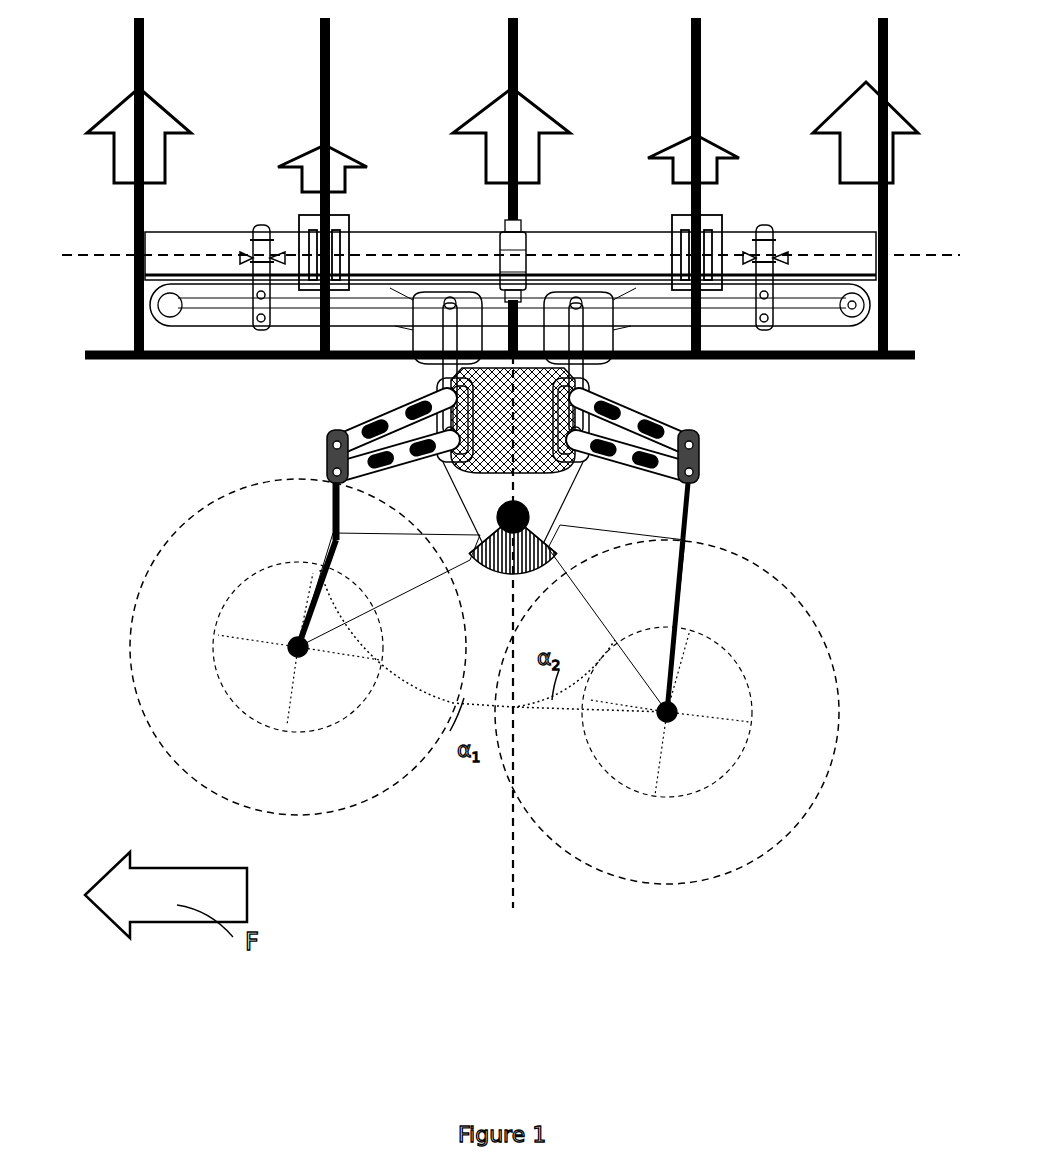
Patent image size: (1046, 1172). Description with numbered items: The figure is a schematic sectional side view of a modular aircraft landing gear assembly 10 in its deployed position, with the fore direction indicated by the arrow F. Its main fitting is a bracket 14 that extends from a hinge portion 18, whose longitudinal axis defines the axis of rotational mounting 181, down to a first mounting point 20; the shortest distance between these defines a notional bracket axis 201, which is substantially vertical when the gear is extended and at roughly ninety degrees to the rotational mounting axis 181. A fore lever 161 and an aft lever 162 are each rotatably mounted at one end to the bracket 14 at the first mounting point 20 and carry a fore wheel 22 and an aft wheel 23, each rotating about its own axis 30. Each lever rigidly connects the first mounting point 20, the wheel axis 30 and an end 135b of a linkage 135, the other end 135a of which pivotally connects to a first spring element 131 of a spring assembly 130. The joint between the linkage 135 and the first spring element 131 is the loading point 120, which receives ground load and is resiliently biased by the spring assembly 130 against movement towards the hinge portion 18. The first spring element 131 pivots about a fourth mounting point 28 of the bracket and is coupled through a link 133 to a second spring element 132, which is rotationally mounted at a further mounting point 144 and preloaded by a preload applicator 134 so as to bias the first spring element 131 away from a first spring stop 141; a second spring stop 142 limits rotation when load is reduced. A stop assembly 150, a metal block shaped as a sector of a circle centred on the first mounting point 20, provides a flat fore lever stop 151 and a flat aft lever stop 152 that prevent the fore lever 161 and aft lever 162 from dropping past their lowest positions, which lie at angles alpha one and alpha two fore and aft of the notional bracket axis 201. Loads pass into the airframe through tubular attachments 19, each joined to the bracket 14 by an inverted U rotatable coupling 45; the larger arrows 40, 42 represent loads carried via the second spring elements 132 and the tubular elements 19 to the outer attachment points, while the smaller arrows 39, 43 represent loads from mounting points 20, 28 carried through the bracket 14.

The aircraft landing gear assembly 10 is at (163, 471).
The bracket 14 is at (470, 487).
The hinge portion 18 is at (882, 262).
The tubular attachment 19 is at (182, 262).
The first mounting point 20 is at (528, 520).
The fore wheel 22 is at (195, 773).
The aft wheel 23 is at (733, 568).
The fourth mounting point 28 is at (405, 402).
The wheel axis 30 is at (672, 722).
The vertical arrow 39 is at (330, 160).
The vertical arrow 40 is at (149, 110).
The vertical arrow 42 is at (855, 115).
The vertical arrow 43 is at (690, 157).
The rotatable coupling 45 is at (350, 215).
The loading point 120 is at (327, 475).
The spring assembly 130 is at (220, 375).
The first spring element 131 is at (716, 455).
The second spring element 132 is at (680, 367).
The link 133 is at (455, 372).
The preload applicator 134 is at (258, 228).
The linkage 135 is at (332, 512).
The end of linkage 135a is at (700, 472).
The end of linkage 135b is at (332, 540).
The first spring stop 141 is at (568, 460).
The second spring stop 142 is at (553, 377).
The further mounting point 144 is at (887, 312).
The stop assembly 150 is at (515, 578).
The fore lever stop 151 is at (466, 552).
The aft lever stop 152 is at (542, 550).
The fore lever 161 is at (389, 590).
The aft lever 162 is at (616, 618).
The axis of rotational mounting 181 is at (117, 252).
The notional bracket axis 201 is at (513, 908).